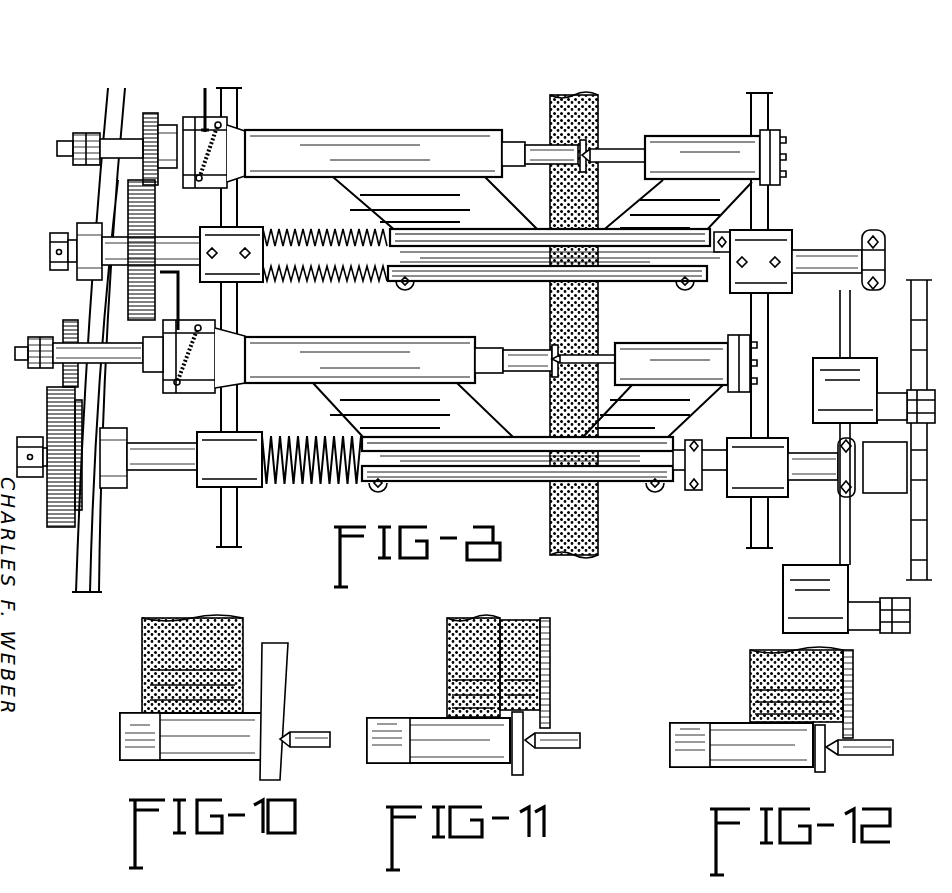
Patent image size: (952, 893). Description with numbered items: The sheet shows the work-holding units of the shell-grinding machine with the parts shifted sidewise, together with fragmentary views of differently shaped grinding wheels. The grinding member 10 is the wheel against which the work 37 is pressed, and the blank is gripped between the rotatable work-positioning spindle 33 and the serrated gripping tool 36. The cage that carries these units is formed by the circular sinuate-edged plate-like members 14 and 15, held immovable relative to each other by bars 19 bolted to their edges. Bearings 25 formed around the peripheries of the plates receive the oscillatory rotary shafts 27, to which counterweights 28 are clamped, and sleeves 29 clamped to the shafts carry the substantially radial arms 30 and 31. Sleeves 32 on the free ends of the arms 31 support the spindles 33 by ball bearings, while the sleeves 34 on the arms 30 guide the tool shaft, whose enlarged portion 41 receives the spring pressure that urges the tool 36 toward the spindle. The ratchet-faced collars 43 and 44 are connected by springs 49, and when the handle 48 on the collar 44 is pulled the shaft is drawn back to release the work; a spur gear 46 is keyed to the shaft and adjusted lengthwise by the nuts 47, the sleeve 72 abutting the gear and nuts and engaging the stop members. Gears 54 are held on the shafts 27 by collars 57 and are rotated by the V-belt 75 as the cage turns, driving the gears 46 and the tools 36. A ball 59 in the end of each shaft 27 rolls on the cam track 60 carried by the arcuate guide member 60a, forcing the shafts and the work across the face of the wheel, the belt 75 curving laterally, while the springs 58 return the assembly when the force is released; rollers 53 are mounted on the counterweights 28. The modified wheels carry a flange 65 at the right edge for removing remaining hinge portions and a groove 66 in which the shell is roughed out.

In FIG. 8, the grinding member 10 is at (574, 325).
In FIG. 10, the grinding member 10 is at (215, 632).
In FIG. 11, the grinding member 10 is at (452, 638).
In FIG. 12, the grinding member 10 is at (752, 662).
In FIG. 8, the plate-like member 14 is at (240, 305).
In FIG. 8, the plate-like member 15 is at (770, 322).
In FIG. 8, the bar 19 is at (630, 265).
In FIG. 8, the bearing 25 is at (213, 487).
In FIG. 8, the oscillatory rotary shaft 27 is at (826, 250).
In FIG. 8, the counterweight 28 is at (838, 358).
In FIG. 8, the sleeve 29 is at (512, 281).
In FIG. 8, the arm 30 is at (505, 212).
In FIG. 8, the arm 31 is at (640, 215).
In FIG. 8, the sleeve 32 is at (695, 138).
In FIG. 8, the work-positioning spindle 33 is at (622, 149).
In FIG. 10, the work-positioning spindle 33 is at (305, 730).
In FIG. 11, the work-positioning spindle 33 is at (565, 733).
In FIG. 12, the work-positioning spindle 33 is at (862, 745).
In FIG. 8, the sleeve 34 is at (385, 142).
In FIG. 8, the gripping tool 36 is at (540, 147).
In FIG. 10, the gripping tool 36 is at (225, 760).
In FIG. 11, the gripping tool 36 is at (480, 755).
In FIG. 12, the gripping tool 36 is at (765, 767).
In FIG. 8, the work 37 is at (586, 148).
In FIG. 10, the work 37 is at (278, 678).
In FIG. 11, the work 37 is at (523, 762).
In FIG. 12, the work 37 is at (830, 760).
In FIG. 8, the enlarged portion of the shaft 41 is at (512, 142).
In FIG. 10, the enlarged portion of the shaft 41 is at (140, 760).
In FIG. 11, the enlarged portion of the shaft 41 is at (385, 763).
In FIG. 12, the enlarged portion of the shaft 41 is at (690, 767).
In FIG. 8, the ratchet-faced collar 43 is at (218, 188).
In FIG. 8, the ratchet-faced collar 44 is at (200, 185).
In FIG. 8, the spur gear 46 is at (70, 325).
In FIG. 8, the nut 47 is at (92, 133).
In FIG. 8, the handle 48 is at (182, 300).
In FIG. 8, the spring 49 is at (232, 140).
In FIG. 8, the roller 53 is at (917, 390).
In FIG. 8, the gear 54 is at (155, 230).
In FIG. 8, the collar 57 is at (60, 233).
In FIG. 8, the spring 58 is at (315, 282).
In FIG. 8, the ball 59 is at (885, 262).
In FIG. 8, the cam track 60 is at (890, 493).
In FIG. 8, the arcuate guide member 60a is at (912, 550).
In FIG. 11, the flange 65 is at (548, 650).
In FIG. 12, the flange 65 is at (855, 682).
In FIG. 11, the groove 66 is at (510, 632).
In FIG. 8, the sleeve 72 is at (128, 364).
In FIG. 8, the V-belt 75 is at (92, 560).